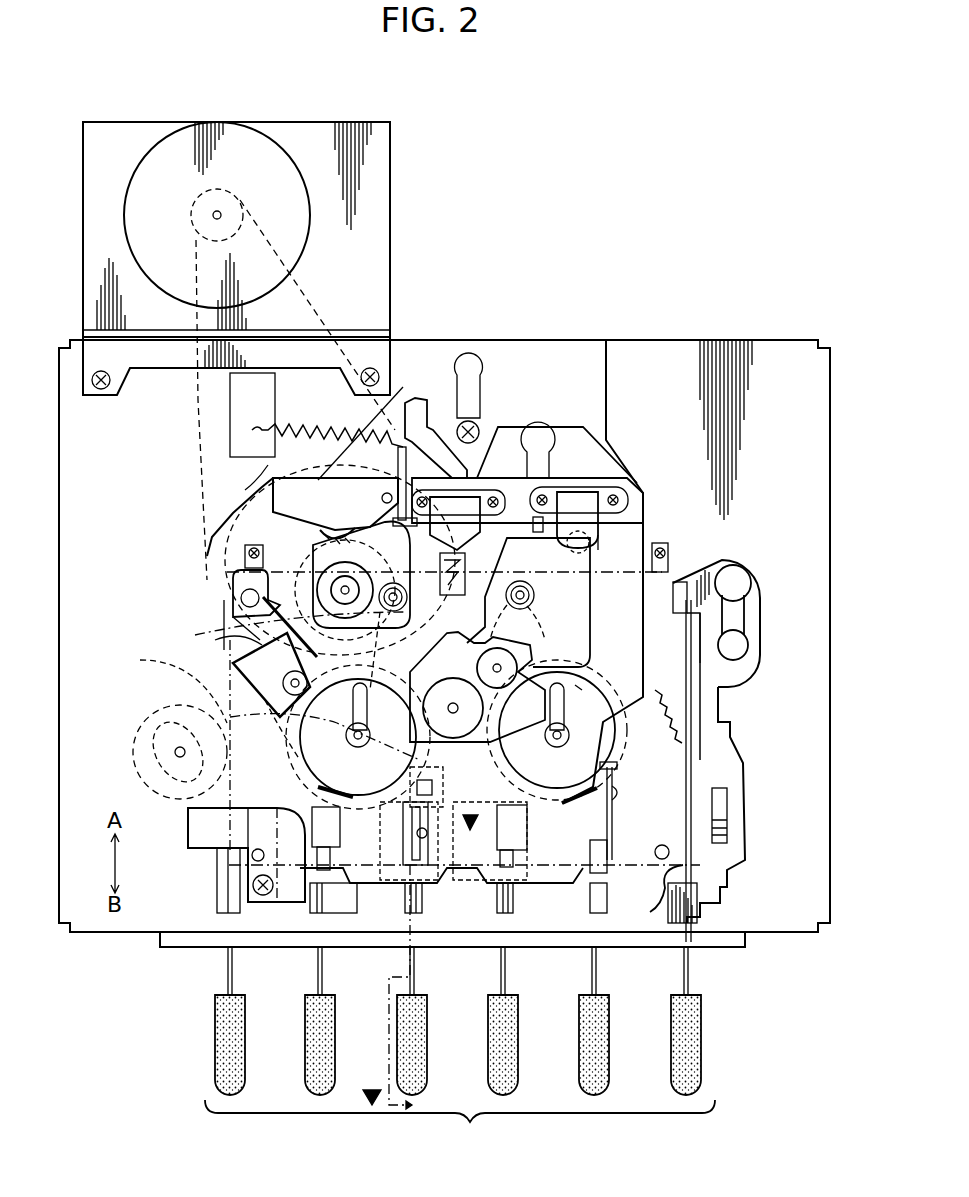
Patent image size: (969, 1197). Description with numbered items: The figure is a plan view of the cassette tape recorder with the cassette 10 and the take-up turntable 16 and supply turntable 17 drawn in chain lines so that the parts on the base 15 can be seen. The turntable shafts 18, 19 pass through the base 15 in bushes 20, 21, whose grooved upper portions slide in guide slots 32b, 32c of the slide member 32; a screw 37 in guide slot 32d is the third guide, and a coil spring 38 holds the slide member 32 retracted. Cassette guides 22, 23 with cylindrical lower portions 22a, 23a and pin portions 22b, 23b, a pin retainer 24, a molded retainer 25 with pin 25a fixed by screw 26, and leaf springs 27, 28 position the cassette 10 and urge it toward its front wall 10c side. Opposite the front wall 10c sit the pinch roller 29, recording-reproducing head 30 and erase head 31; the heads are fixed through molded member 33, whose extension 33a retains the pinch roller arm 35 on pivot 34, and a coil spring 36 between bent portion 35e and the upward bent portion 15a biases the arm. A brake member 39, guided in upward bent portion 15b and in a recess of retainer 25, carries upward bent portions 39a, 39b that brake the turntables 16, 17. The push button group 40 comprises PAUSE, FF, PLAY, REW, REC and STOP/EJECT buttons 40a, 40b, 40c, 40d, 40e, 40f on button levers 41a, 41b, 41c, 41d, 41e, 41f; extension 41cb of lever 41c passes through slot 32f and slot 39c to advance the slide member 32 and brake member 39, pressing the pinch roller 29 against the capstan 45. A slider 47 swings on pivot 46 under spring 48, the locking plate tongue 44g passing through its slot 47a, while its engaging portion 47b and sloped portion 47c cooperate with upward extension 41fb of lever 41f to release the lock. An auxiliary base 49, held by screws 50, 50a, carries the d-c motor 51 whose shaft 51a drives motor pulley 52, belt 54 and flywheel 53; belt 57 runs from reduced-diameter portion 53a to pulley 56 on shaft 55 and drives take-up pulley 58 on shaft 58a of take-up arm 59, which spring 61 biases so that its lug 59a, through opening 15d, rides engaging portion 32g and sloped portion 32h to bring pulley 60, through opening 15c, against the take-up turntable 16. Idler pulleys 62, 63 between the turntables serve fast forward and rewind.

The cassette 10 is at (692, 690).
The front wall 10c is at (628, 555).
The base 15 is at (824, 605).
The upward bent portion 15a is at (252, 415).
The upward bent portion 15b is at (612, 816).
The opening 15c is at (230, 650).
The opening 15d is at (230, 576).
The take-up turntable 16 is at (297, 772).
The supply turntable 17 is at (688, 690).
The shaft 18 is at (363, 702).
The shaft 19 is at (549, 736).
The bush 20 is at (368, 742).
The bush 21 is at (565, 712).
The cassette guide 22 is at (388, 584).
The cylindrical lower portion 22a is at (397, 612).
The pin portion 22b is at (405, 598).
The cassette guide 23 is at (520, 594).
The cylindrical lower portion 23a is at (512, 602).
The pin portion 23b is at (528, 603).
The cassette retainer 24 is at (655, 852).
The cassette retainer 25 is at (250, 808).
The pin 25a is at (252, 855).
The screw 26 is at (264, 893).
The leaf spring 27 is at (245, 563).
The leaf spring 28 is at (671, 562).
The pinch roller 29 is at (335, 511).
The recording-reproducing head 30 is at (520, 548).
The erase head 31 is at (584, 550).
The slide member 32 is at (604, 391).
The guide slot 32b is at (333, 792).
The guide slot 32c is at (583, 682).
The guide slot 32d is at (478, 394).
The slot 32f is at (349, 900).
The engaging portion 32g is at (235, 620).
The sloped portion 32h is at (247, 548).
The molded member 33 is at (517, 490).
The extension 33a is at (405, 403).
The pivot 34 is at (383, 496).
The pinch roller arm 35 is at (270, 492).
The bent portion 35e is at (376, 432).
The coil spring 36 is at (268, 463).
The screw 37 is at (470, 429).
The coil spring 38 is at (455, 546).
The brake member 39 is at (541, 742).
The upward bent portion 39a is at (330, 805).
The upward bent portion 39b is at (558, 750).
The slot 39c is at (426, 836).
The actuating push button group 40 is at (460, 1126).
The PAUSE button 40a is at (248, 1060).
The FF button 40b is at (338, 1060).
The PLAY button 40c is at (430, 1060).
The REW button 40d is at (521, 1060).
The REC button 40e is at (612, 1060).
The STOP/EJECT button 40f is at (704, 1060).
The button lever 41a is at (230, 965).
The button lever 41b is at (320, 965).
The button lever 41c is at (412, 965).
The extension 41cb is at (453, 842).
The button lever 41d is at (503, 965).
The button lever 41e is at (594, 965).
The button lever 41f is at (686, 965).
The upward extension 41fb is at (680, 862).
The tongue 44g is at (728, 828).
The capstan 45 is at (346, 600).
The pivot 46 is at (746, 640).
The slider 47 is at (730, 760).
The slot 47a is at (726, 808).
The engaging portion 47b is at (670, 872).
The sloped portion 47c is at (668, 905).
The spring 48 is at (686, 694).
The auxiliary base 49 is at (381, 265).
The screw 50 is at (101, 390).
The screw 50a is at (360, 379).
The d-c motor 51 is at (283, 152).
The motor shaft 51a is at (224, 204).
The motor pulley 52 is at (190, 200).
The flywheel 53 is at (212, 540).
The reduced-diameter cylindrical portion 53a is at (385, 640).
The belt 54 is at (192, 404).
The shaft 55 is at (188, 826).
The pulley 56 is at (135, 756).
The belt 57 is at (160, 672).
The take-up pulley 58 is at (238, 683).
The shaft 58a is at (217, 672).
The take-up arm 59 is at (147, 712).
The lug 59a is at (240, 598).
The pulley 60 is at (230, 735).
The spring 61 is at (265, 745).
The idler pulley 62 is at (454, 738).
The idler pulley 63 is at (505, 670).